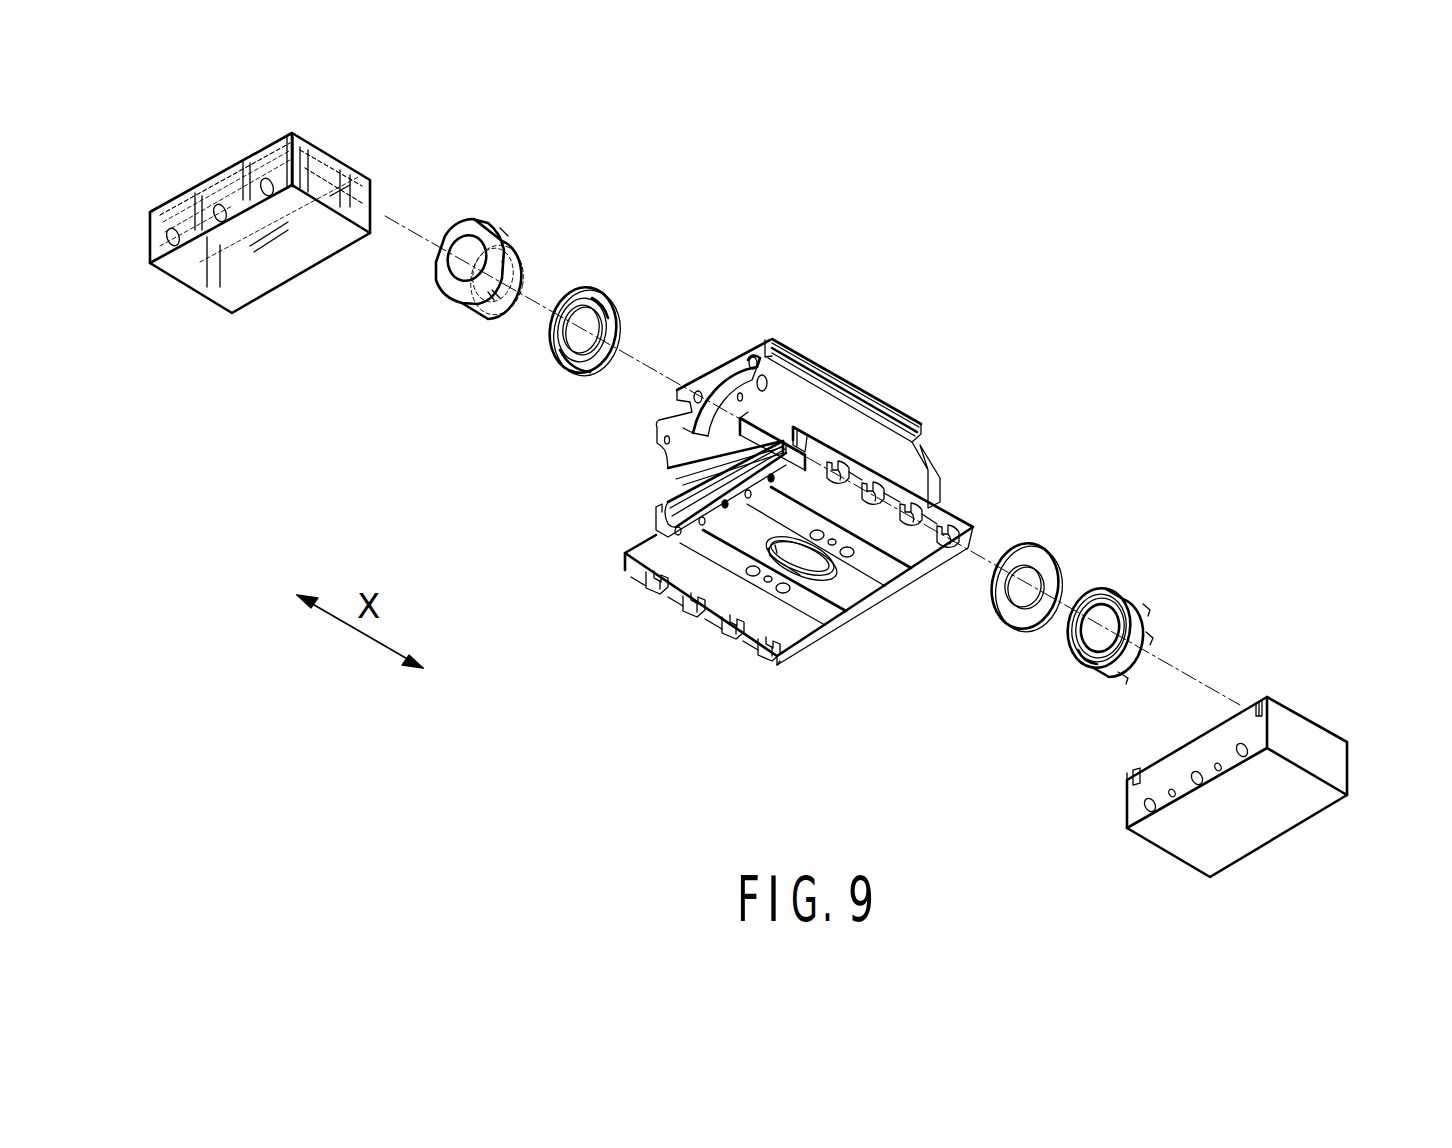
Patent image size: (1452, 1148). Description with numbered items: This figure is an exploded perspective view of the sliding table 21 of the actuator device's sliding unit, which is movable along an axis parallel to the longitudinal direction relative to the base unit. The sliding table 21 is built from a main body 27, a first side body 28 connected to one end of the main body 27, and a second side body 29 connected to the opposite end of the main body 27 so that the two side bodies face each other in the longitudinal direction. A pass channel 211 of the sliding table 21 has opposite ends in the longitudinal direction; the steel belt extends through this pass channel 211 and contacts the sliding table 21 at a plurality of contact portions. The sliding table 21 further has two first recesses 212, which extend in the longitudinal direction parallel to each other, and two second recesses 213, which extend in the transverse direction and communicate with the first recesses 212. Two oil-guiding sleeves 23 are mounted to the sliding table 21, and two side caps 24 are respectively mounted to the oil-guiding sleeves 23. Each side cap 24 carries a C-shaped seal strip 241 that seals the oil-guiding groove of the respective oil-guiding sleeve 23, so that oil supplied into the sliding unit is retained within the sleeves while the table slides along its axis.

The sliding table 21 is at (755, 467).
The pass channel 211 is at (723, 483).
The first recesses 212 is at (323, 148).
The second recesses 213 is at (212, 178).
The oil-guiding sleeves 23 is at (487, 220).
The side caps 24 is at (590, 285).
The C-shaped seal strip 241 is at (577, 360).
The main body 27 is at (837, 380).
The first side body 28 is at (287, 235).
The second side body 29 is at (1280, 840).